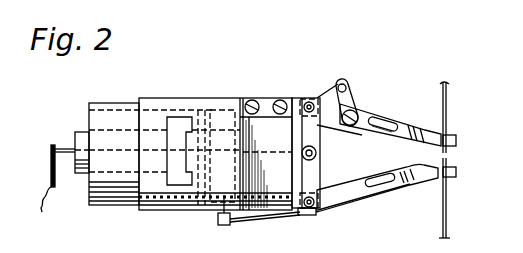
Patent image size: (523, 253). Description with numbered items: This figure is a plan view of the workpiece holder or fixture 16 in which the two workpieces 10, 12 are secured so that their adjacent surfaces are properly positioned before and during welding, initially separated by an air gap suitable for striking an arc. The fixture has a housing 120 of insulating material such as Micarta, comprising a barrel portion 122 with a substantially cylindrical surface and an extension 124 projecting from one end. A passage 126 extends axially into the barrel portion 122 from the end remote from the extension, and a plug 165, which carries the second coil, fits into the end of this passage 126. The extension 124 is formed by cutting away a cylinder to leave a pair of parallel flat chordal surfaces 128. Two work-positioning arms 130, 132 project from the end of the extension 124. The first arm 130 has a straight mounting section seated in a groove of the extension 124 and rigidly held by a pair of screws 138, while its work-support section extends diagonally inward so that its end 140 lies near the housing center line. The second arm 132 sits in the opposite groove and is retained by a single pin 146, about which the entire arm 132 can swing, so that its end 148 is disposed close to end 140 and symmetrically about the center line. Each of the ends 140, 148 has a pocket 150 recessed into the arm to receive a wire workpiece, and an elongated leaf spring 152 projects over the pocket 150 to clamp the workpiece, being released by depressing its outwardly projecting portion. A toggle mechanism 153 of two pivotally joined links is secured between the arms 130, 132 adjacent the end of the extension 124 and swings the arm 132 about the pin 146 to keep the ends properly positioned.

The workpiece 10 is at (447, 90).
The workpiece 12 is at (447, 207).
The workpiece holder or fixture 16 is at (232, 69).
The housing 120 is at (173, 212).
The barrel portion 122 is at (160, 98).
The extension 124 is at (283, 174).
The passage 126 is at (146, 116).
The flat chordal surfaces 128 is at (265, 127).
The work-positioning arm 130 is at (330, 120).
The work-positioning arm 132 is at (347, 192).
The screws 138 is at (256, 100).
The end 140 is at (458, 143).
The pin 146 is at (250, 220).
The end 148 is at (458, 172).
The pocket 150 is at (440, 138).
The leaf spring 152 is at (402, 120).
The toggle mechanism 153 is at (319, 155).
The plug 165 is at (123, 213).